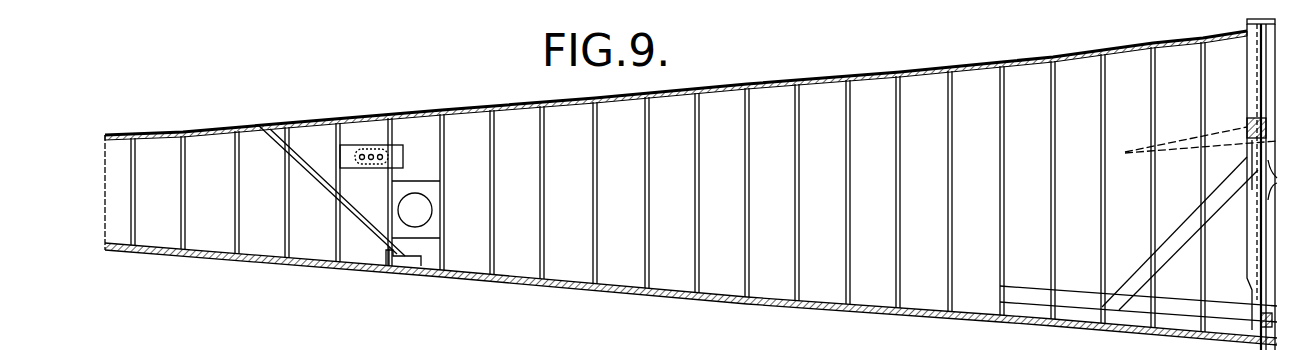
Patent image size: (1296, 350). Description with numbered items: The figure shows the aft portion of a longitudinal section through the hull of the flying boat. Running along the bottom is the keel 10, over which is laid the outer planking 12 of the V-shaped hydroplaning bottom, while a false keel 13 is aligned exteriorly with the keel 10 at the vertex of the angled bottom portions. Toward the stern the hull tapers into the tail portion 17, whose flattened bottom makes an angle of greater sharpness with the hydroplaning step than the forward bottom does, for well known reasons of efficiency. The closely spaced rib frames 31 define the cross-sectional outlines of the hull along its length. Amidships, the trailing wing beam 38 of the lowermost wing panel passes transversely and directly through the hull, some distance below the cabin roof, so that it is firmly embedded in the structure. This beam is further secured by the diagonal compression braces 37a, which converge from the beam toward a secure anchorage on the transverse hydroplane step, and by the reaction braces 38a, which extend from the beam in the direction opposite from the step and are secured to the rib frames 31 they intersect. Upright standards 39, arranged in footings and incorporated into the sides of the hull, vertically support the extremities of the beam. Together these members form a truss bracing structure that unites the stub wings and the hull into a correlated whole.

The keel 10 is at (714, 297).
The outer planking 12 is at (770, 306).
The false keel 13 is at (877, 310).
The tail portion 17 is at (343, 195).
The rib frames 31 is at (496, 194).
The diagonal compression braces 37a is at (1266, 204).
The trailing wing beam 38 is at (1247, 127).
The reaction braces 38a is at (1170, 257).
The upright standards 39 is at (1249, 259).